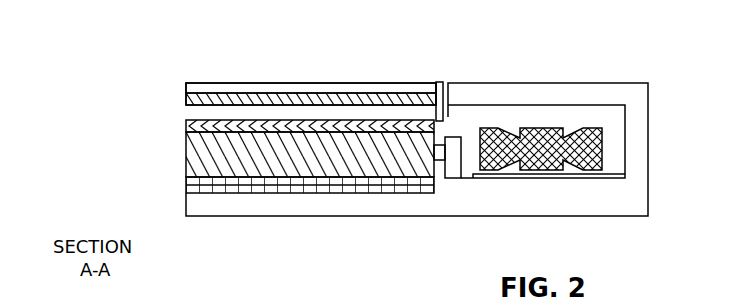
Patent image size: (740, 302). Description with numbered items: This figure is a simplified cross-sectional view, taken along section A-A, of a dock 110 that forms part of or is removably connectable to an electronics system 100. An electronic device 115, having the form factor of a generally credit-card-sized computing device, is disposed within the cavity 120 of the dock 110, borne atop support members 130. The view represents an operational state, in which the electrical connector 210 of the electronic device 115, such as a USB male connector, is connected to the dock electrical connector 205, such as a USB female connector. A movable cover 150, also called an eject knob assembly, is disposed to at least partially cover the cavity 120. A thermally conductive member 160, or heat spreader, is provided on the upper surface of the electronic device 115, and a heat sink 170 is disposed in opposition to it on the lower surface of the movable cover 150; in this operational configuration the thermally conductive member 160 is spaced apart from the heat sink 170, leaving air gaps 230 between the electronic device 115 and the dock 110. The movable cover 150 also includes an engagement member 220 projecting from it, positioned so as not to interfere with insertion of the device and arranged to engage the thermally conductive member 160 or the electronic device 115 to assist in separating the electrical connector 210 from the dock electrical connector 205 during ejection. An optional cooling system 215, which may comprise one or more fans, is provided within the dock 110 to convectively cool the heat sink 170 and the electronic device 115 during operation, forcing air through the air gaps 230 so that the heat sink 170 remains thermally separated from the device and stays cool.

The electronics system 100 is at (559, 39).
The dock 110 is at (308, 217).
The electronic device 115 is at (186, 156).
The cavity 120 is at (472, 136).
The support members 130 is at (186, 187).
The movable cover 150 is at (186, 88).
The thermally conductive member 160 is at (186, 127).
The heat sink 170 is at (186, 99).
The dock electrical connector 205 is at (447, 178).
The electrical connector 210 is at (445, 180).
The cooling system 215 is at (555, 170).
The engagement member 220 is at (438, 82).
The air gaps 230 is at (305, 114).